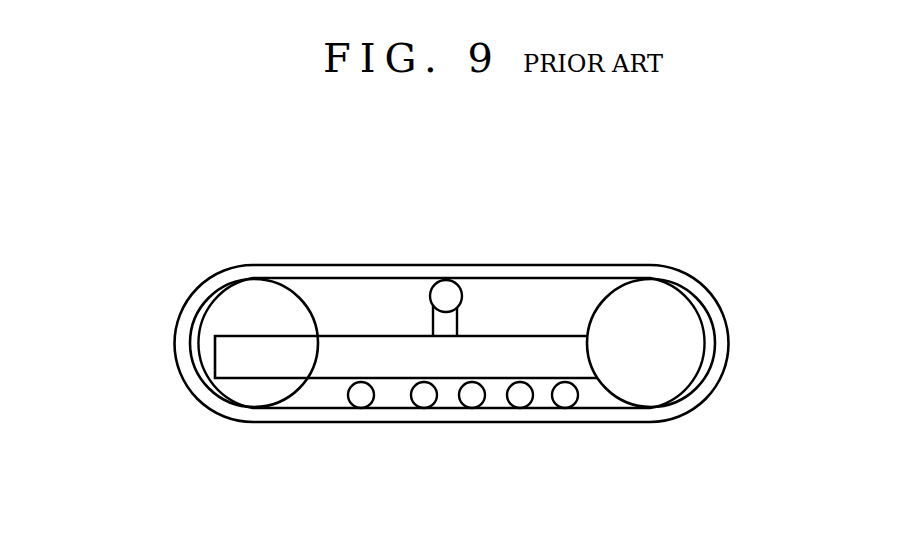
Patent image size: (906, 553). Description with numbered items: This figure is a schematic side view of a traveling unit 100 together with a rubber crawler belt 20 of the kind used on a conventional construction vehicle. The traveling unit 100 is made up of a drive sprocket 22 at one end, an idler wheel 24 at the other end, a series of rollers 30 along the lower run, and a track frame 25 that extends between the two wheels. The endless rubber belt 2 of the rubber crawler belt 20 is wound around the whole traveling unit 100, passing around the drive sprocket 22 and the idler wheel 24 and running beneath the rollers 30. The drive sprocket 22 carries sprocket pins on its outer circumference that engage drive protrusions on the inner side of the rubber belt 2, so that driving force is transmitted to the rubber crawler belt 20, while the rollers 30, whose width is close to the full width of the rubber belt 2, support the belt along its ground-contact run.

The traveling unit 100 is at (386, 321).
The rubber crawler belt 20 is at (668, 268).
The rubber belt 2 is at (713, 295).
The drive sprocket 22 is at (683, 347).
The idler wheel 24 is at (225, 316).
The track frame 25 is at (237, 353).
The rollers 30 is at (567, 393).